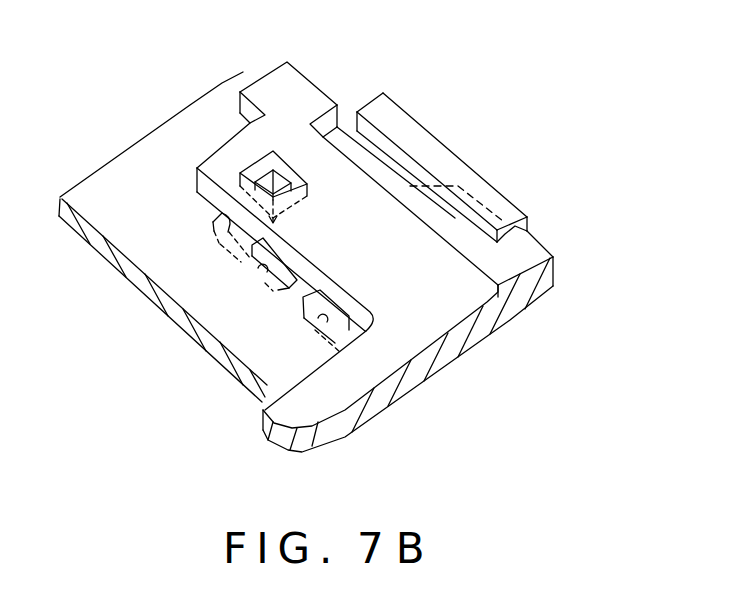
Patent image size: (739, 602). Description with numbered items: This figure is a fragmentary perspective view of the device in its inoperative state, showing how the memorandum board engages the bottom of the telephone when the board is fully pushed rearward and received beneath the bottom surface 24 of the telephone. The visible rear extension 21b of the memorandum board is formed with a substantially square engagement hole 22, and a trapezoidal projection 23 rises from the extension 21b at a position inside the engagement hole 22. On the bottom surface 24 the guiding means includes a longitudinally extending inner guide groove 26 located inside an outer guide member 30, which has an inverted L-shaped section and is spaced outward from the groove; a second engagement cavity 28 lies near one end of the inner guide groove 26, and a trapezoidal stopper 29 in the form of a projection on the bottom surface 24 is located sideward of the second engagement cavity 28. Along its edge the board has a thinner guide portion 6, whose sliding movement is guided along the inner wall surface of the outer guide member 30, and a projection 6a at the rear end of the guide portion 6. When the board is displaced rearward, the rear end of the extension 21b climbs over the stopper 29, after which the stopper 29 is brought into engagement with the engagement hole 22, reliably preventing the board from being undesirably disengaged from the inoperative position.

The guide portion 6 is at (528, 258).
The projection 6a is at (297, 88).
The extension 21b is at (392, 288).
The engagement hole 22 is at (247, 172).
The trapezoidal projection 23 is at (213, 222).
The bottom surface 24 is at (148, 263).
The inner guide groove 26 is at (305, 322).
The second engagement cavity 28 is at (257, 270).
The trapezoidal stopper 29 is at (296, 165).
The outer guide member 30 is at (430, 147).